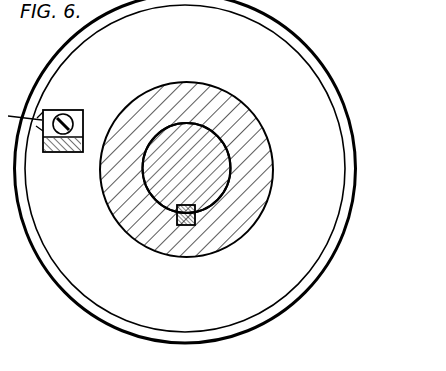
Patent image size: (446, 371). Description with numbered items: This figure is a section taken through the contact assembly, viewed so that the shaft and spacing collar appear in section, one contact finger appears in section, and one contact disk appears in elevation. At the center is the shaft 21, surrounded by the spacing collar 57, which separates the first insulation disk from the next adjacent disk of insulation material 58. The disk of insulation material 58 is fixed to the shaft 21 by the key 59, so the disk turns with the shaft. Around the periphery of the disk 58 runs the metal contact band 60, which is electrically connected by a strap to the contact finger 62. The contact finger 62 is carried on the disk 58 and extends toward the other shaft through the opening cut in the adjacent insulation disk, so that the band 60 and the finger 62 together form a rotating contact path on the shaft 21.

The shaft 21 is at (213, 176).
The collar 57 is at (260, 140).
The disk of insulation material 58 is at (291, 62).
The key 59 is at (195, 222).
The metal contact band 60 is at (330, 83).
The contact finger 62 is at (71, 152).